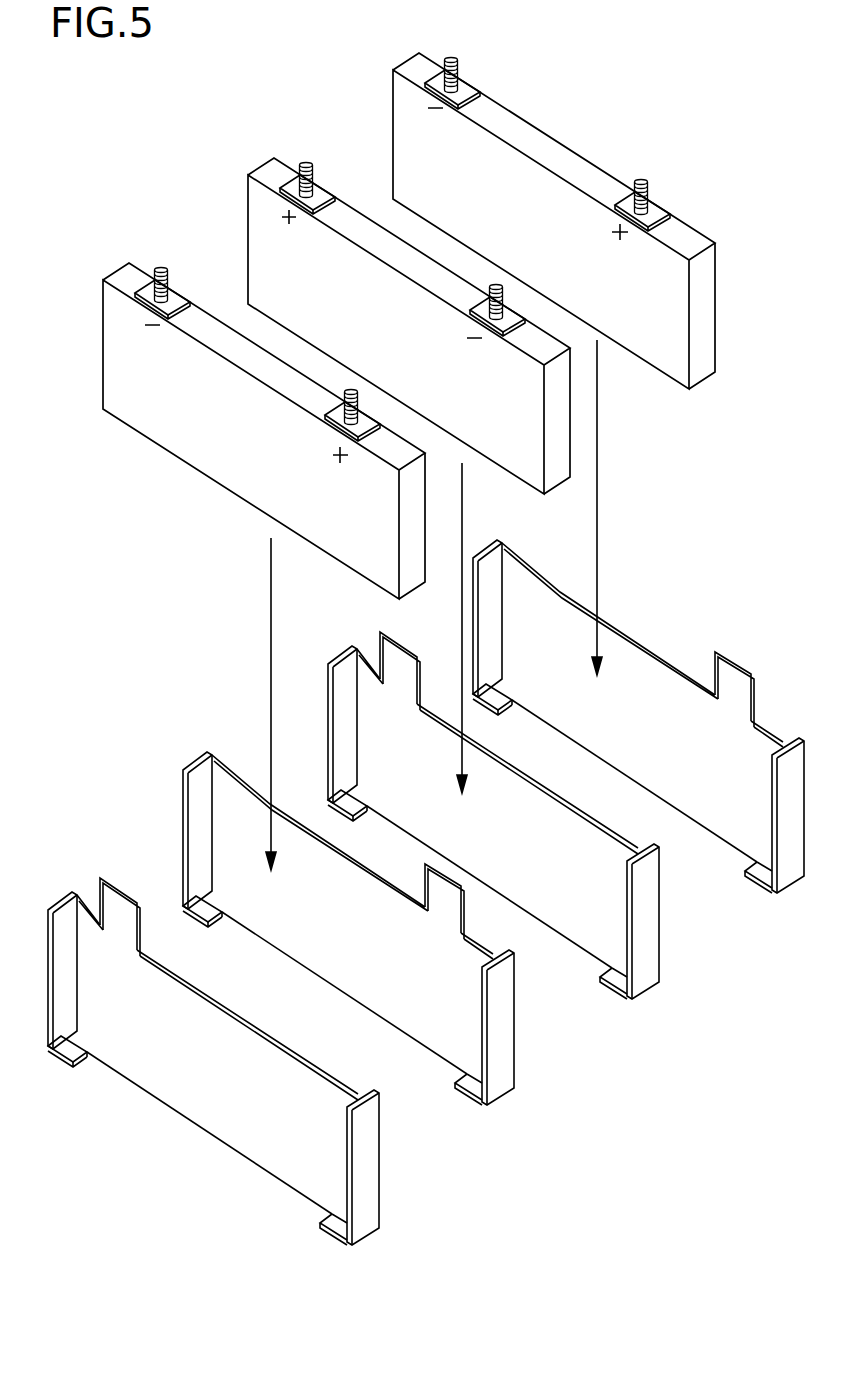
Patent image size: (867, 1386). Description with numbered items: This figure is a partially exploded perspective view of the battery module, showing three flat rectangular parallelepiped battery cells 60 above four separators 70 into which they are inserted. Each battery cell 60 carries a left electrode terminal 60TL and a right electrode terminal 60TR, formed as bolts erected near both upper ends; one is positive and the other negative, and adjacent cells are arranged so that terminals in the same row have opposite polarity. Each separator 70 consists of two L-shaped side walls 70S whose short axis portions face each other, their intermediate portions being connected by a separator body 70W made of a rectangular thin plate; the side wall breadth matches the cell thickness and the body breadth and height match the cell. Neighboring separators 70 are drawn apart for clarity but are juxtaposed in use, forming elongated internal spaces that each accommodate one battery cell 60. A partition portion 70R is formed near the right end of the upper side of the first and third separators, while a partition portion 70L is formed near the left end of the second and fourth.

The battery cell 60 is at (418, 67).
The left electrode terminal 60TL is at (452, 60).
The right electrode terminal 60TR is at (643, 184).
The separator 70 is at (409, 892).
The separator body 70W is at (327, 942).
The side wall 70S is at (207, 753).
The partition portion 70L is at (400, 645).
The partition portion 70R is at (737, 660).